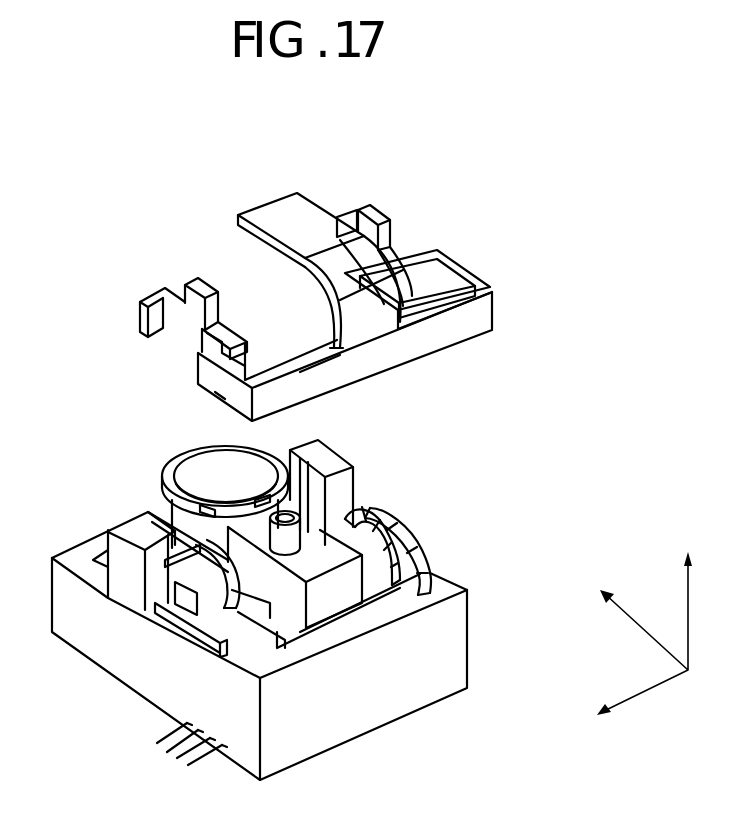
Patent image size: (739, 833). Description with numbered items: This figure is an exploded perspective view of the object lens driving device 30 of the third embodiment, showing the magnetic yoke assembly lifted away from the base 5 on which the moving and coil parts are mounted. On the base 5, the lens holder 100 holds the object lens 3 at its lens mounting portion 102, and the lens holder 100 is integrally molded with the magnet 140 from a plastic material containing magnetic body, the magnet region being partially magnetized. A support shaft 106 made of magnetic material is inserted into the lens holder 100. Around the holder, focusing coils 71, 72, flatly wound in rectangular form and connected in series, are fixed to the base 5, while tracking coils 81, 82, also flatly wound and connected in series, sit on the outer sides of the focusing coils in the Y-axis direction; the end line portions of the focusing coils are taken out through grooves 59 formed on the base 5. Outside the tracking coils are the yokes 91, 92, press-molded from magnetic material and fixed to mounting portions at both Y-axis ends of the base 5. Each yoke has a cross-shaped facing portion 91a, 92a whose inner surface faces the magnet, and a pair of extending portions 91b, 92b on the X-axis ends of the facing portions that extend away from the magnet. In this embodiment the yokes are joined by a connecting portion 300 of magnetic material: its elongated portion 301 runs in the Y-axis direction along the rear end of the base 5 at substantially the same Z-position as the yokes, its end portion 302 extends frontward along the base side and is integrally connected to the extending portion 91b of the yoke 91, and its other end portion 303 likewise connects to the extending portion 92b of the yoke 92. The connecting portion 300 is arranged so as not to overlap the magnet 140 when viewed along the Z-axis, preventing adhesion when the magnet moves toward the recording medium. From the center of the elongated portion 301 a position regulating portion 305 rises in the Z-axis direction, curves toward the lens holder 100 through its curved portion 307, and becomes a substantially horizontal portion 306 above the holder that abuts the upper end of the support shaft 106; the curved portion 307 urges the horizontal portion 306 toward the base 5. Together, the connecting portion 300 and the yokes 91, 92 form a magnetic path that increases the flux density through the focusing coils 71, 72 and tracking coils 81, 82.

The object lens driving device 30 is at (615, 205).
The connecting portion 300 is at (478, 336).
The elongated portion 301 is at (420, 340).
The end portion 302 is at (244, 398).
The other end portion 303 is at (470, 265).
The position regulating portion 305 is at (160, 153).
The horizontal portion 306 is at (282, 225).
The curved portion 307 is at (348, 308).
The yoke 92 is at (430, 105).
The facing portion 92a is at (390, 228).
The extending portions 92b is at (346, 210).
The yoke 91 is at (60, 334).
The facing portion 91a is at (185, 332).
The extending portions 91b is at (140, 310).
The base 5 is at (440, 690).
The object lens 3 is at (205, 470).
The lens mounting portion 102 is at (168, 507).
The support shaft 106 is at (322, 490).
The lens holder 100 is at (322, 602).
The focusing coil 72 is at (366, 520).
The tracking coil 82 is at (430, 562).
The focusing coil 71 is at (270, 645).
The magnet 140 is at (297, 647).
The tracking coil 81 is at (188, 572).
The grooves 59 is at (227, 752).